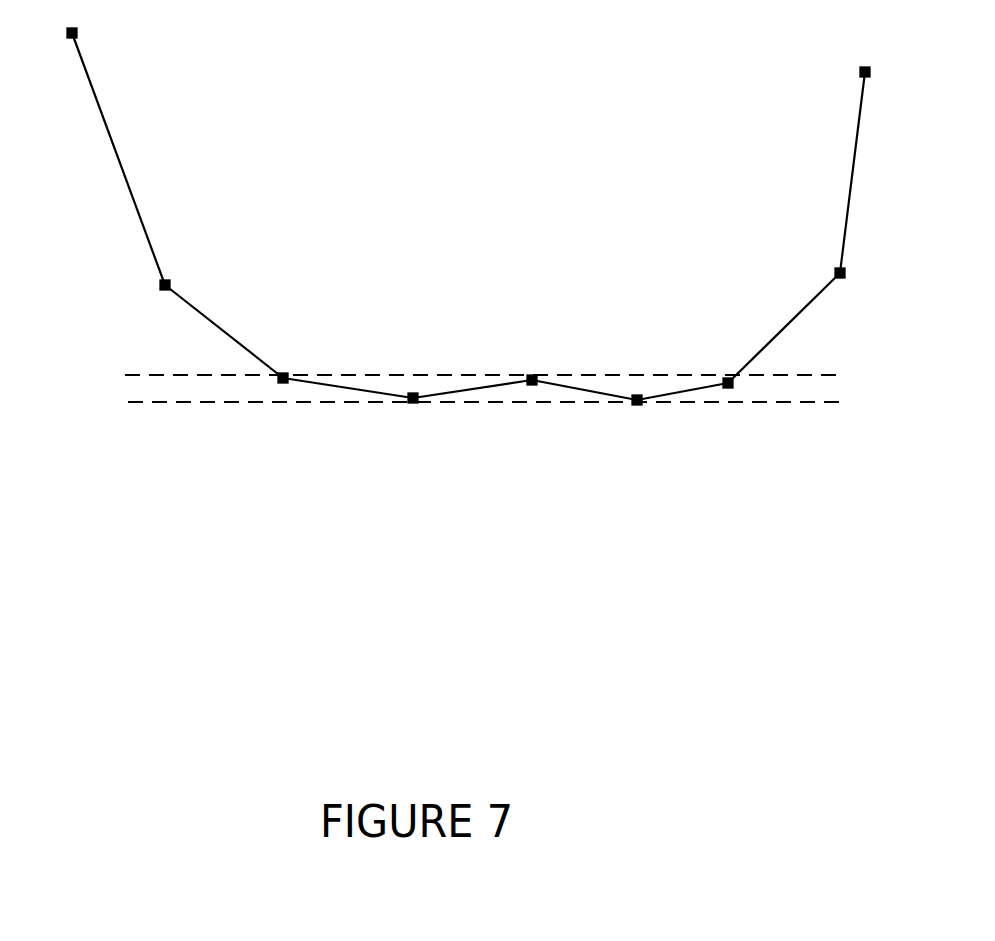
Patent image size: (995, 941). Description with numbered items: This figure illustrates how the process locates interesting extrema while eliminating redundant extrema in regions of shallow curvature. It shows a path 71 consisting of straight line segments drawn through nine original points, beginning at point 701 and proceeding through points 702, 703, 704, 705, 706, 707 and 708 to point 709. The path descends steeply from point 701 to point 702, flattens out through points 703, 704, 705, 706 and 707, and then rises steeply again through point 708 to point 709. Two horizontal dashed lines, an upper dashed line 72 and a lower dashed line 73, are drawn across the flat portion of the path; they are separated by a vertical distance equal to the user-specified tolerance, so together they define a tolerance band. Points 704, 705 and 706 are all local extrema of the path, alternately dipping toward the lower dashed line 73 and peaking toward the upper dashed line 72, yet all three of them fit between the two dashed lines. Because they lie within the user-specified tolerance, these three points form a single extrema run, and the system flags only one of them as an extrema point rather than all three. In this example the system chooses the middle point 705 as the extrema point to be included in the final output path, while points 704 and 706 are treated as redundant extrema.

The path 71 is at (468, 216).
The dashed line 72 is at (450, 362).
The dashed line 73 is at (450, 415).
The original point 701 is at (63, 19).
The original point 702 is at (190, 272).
The original point 703 is at (303, 359).
The original point 704 is at (411, 416).
The middle point 705 is at (530, 362).
The original point 706 is at (636, 418).
The original point 707 is at (710, 362).
The original point 708 is at (864, 279).
The original point 709 is at (834, 74).